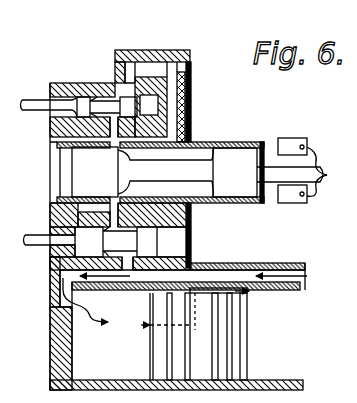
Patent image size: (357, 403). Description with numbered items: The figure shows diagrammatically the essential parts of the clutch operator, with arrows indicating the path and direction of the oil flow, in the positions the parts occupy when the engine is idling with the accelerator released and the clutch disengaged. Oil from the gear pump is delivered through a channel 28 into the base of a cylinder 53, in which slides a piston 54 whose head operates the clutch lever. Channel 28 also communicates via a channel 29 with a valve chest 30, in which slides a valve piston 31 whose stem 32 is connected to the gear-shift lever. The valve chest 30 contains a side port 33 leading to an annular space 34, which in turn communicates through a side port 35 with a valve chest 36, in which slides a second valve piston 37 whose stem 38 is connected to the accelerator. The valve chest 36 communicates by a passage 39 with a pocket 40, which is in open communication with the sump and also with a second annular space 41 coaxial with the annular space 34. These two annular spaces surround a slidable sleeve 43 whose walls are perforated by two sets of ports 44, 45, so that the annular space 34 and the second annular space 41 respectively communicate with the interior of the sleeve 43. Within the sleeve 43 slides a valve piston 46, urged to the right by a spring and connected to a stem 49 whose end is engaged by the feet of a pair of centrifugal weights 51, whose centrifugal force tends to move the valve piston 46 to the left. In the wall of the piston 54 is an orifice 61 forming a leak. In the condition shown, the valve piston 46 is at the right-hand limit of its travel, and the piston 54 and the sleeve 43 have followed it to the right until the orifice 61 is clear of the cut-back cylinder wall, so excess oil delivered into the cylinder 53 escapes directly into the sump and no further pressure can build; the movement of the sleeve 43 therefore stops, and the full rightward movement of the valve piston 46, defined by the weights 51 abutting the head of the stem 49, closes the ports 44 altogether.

The channel 28 is at (228, 277).
The channel 29 is at (130, 262).
The valve chest 30 is at (158, 228).
The valve piston 31 is at (157, 243).
The stem 32 is at (37, 236).
The side port 33 is at (110, 215).
The annular space 34 is at (83, 142).
The side port 35 is at (115, 130).
The valve chest 36 is at (147, 103).
The second valve piston 37 is at (79, 99).
The stem 38 is at (36, 103).
The passage 39 is at (128, 83).
The pocket 40 is at (173, 65).
The second annular space 41 is at (183, 87).
The slidable sleeve 43 is at (250, 205).
The ports 44 is at (112, 148).
The ports 45 is at (192, 115).
The valve piston 46 is at (183, 175).
The stem 49 is at (271, 167).
The centrifugal weights 51 is at (295, 138).
The cylinder 53 is at (80, 355).
The piston 54 is at (247, 333).
The orifice 61 is at (190, 293).